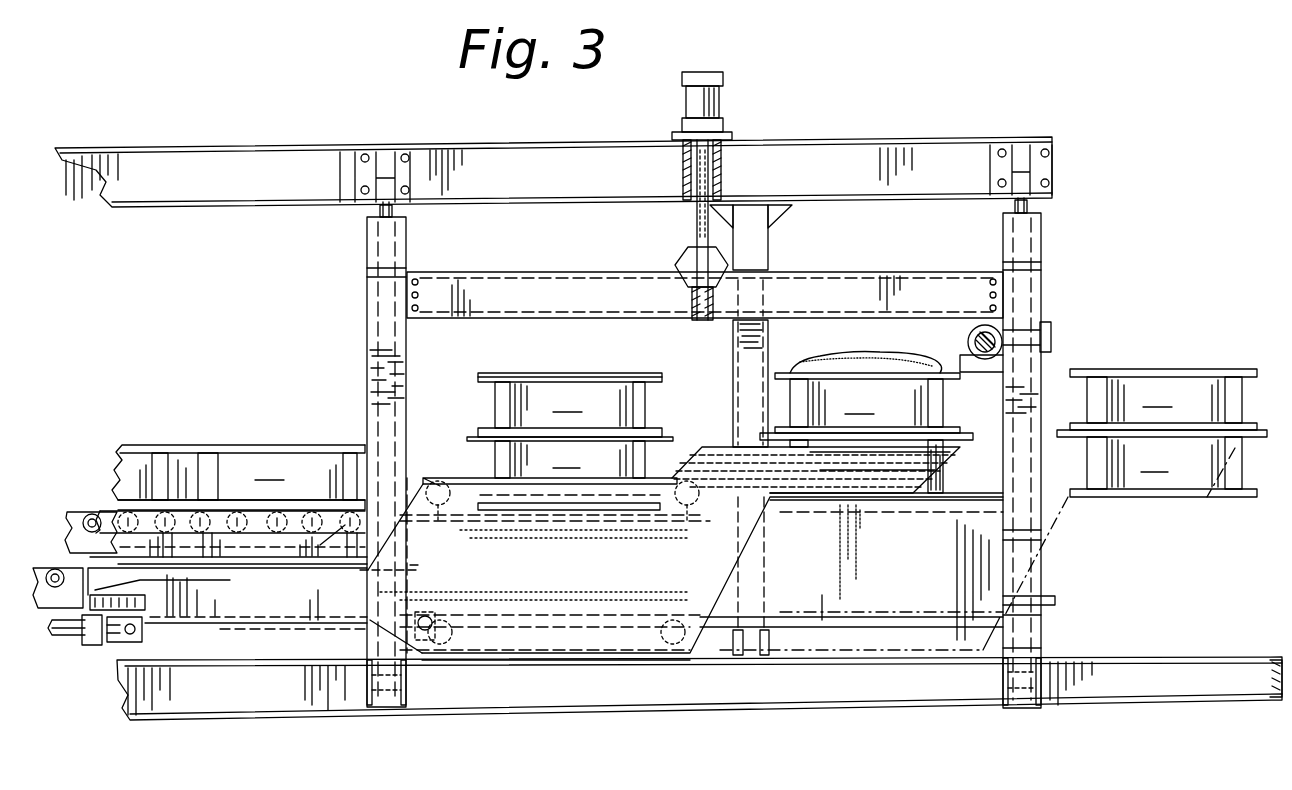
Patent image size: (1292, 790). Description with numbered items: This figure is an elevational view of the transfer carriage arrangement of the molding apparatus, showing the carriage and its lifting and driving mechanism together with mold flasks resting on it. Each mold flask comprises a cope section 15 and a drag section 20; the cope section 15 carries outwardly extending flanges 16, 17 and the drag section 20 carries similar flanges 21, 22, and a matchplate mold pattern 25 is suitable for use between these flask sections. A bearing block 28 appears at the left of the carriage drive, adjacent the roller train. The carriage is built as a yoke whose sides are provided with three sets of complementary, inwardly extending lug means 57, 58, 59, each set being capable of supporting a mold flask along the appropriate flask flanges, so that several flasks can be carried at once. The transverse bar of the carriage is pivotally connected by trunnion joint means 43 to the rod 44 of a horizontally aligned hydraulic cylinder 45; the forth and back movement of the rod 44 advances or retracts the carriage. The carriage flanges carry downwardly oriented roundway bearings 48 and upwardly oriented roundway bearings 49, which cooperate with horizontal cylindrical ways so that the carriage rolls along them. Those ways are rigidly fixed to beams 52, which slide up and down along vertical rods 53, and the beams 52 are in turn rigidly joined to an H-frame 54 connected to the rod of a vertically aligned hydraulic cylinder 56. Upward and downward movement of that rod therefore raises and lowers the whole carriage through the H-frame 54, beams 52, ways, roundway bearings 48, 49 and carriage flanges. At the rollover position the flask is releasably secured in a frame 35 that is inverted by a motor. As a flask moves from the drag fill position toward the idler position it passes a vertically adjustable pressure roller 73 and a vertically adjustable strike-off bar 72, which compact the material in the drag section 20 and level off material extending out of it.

The cope section 15 is at (868, 465).
The cope flange 16 is at (1258, 437).
The cope flange 17 is at (1238, 497).
The drag section 20 is at (684, 431).
The drag flange 21 is at (662, 428).
The drag flange 22 is at (662, 375).
The matchplate mold pattern 25 is at (467, 440).
The chain and bearing block 28 is at (55, 570).
The frame 35 is at (695, 232).
The trunnion joint means 43 is at (142, 628).
The rod 44 is at (125, 642).
The hydraulic cylinder 45 is at (92, 640).
The roundway bearings 48 is at (440, 512).
The roundway bearings 49 is at (455, 660).
The beams 52 is at (367, 386).
The rods 53 is at (365, 210).
The H-frame 54 is at (498, 272).
The hydraulic cylinder 56 is at (723, 110).
The lug means 57 is at (240, 572).
The lug means 58 is at (545, 512).
The lug means 59 is at (883, 448).
The strike-off bar 72 is at (1051, 338).
The pressure roller 73 is at (968, 340).